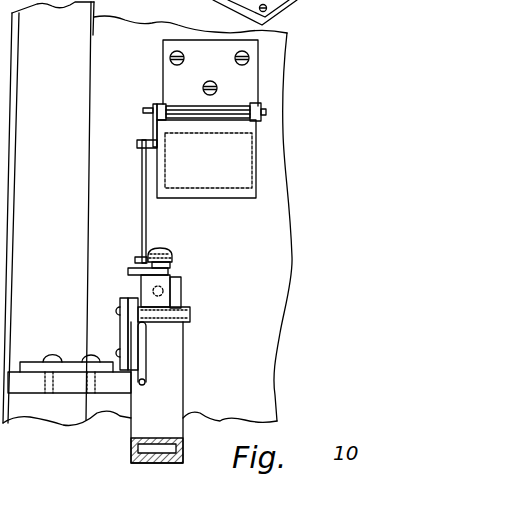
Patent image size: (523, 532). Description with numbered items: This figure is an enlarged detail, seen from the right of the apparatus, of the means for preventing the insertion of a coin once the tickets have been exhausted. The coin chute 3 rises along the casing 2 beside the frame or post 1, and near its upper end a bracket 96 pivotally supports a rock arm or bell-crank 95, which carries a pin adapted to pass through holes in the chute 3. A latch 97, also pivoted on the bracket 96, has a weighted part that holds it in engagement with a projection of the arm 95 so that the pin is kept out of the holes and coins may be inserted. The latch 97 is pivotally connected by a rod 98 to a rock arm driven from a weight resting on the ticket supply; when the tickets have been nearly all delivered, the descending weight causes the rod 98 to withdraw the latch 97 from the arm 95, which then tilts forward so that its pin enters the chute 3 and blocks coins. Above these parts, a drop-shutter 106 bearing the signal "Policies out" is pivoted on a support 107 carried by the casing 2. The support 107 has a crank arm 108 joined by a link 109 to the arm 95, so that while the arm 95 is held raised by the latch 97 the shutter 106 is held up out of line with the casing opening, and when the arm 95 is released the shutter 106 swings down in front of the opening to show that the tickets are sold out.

The wall post 1 is at (46, 160).
The casing 2 is at (193, 219).
The chute 3 is at (160, 385).
The rock arm 95 is at (164, 292).
The bracket 96 is at (122, 333).
The latch 97 is at (134, 301).
The rod 98 is at (148, 341).
The drop-shutter 106 is at (249, 196).
The support 107 is at (267, 108).
The crank arm 108 is at (152, 104).
The link 109 is at (141, 193).